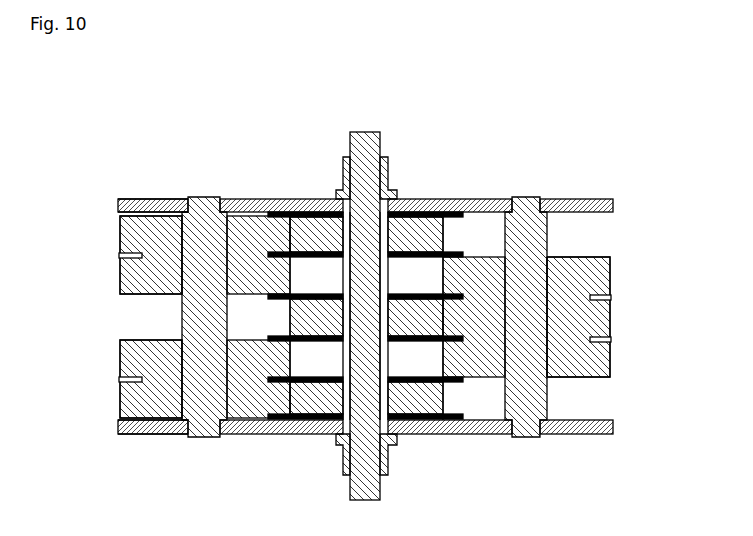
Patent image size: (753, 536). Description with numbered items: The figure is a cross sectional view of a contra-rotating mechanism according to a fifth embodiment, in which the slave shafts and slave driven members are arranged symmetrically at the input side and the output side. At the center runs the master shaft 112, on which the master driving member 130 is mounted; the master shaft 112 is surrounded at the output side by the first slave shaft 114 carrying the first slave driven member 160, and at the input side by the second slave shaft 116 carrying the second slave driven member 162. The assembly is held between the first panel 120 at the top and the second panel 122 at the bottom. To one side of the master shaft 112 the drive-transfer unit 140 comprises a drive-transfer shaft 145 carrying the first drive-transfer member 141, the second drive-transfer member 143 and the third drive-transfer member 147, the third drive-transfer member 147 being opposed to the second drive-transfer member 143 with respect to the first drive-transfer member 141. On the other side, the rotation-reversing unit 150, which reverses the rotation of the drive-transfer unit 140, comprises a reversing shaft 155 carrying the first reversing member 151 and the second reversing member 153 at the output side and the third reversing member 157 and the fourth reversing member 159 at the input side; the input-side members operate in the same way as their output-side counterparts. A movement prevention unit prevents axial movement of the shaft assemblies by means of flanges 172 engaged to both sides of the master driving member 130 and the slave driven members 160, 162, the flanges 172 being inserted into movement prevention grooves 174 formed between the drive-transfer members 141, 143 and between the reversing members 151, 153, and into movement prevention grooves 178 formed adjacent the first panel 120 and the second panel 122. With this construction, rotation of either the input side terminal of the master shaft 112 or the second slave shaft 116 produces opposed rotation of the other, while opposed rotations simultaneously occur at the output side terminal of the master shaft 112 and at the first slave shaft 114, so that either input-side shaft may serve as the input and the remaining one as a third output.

The master shaft 112 is at (365, 131).
The first slave shaft 114 is at (343, 473).
The second slave shaft 116 is at (388, 157).
The first panel 120 is at (250, 199).
The second panel 122 is at (595, 434).
The master driving member 130 is at (415, 325).
The drive-transfer unit 140 is at (614, 384).
The first drive-transfer member 141 is at (612, 318).
The second drive-transfer member 143 is at (612, 372).
The drive-transfer shaft 145 is at (522, 197).
The third drive-transfer member 147 is at (612, 262).
The rotation-reversing unit 150 is at (113, 335).
The first reversing member 151 is at (120, 348).
The second reversing member 153 is at (120, 407).
The reversing shaft 155 is at (198, 197).
The third reversing member 157 is at (120, 286).
The fourth reversing member 159 is at (120, 226).
The first slave driven member 160 is at (290, 434).
The second slave driven member 162 is at (311, 225).
The flange 172 is at (462, 340).
The movement prevention groove 174 is at (120, 256).
The movement prevention groove 178 is at (145, 199).